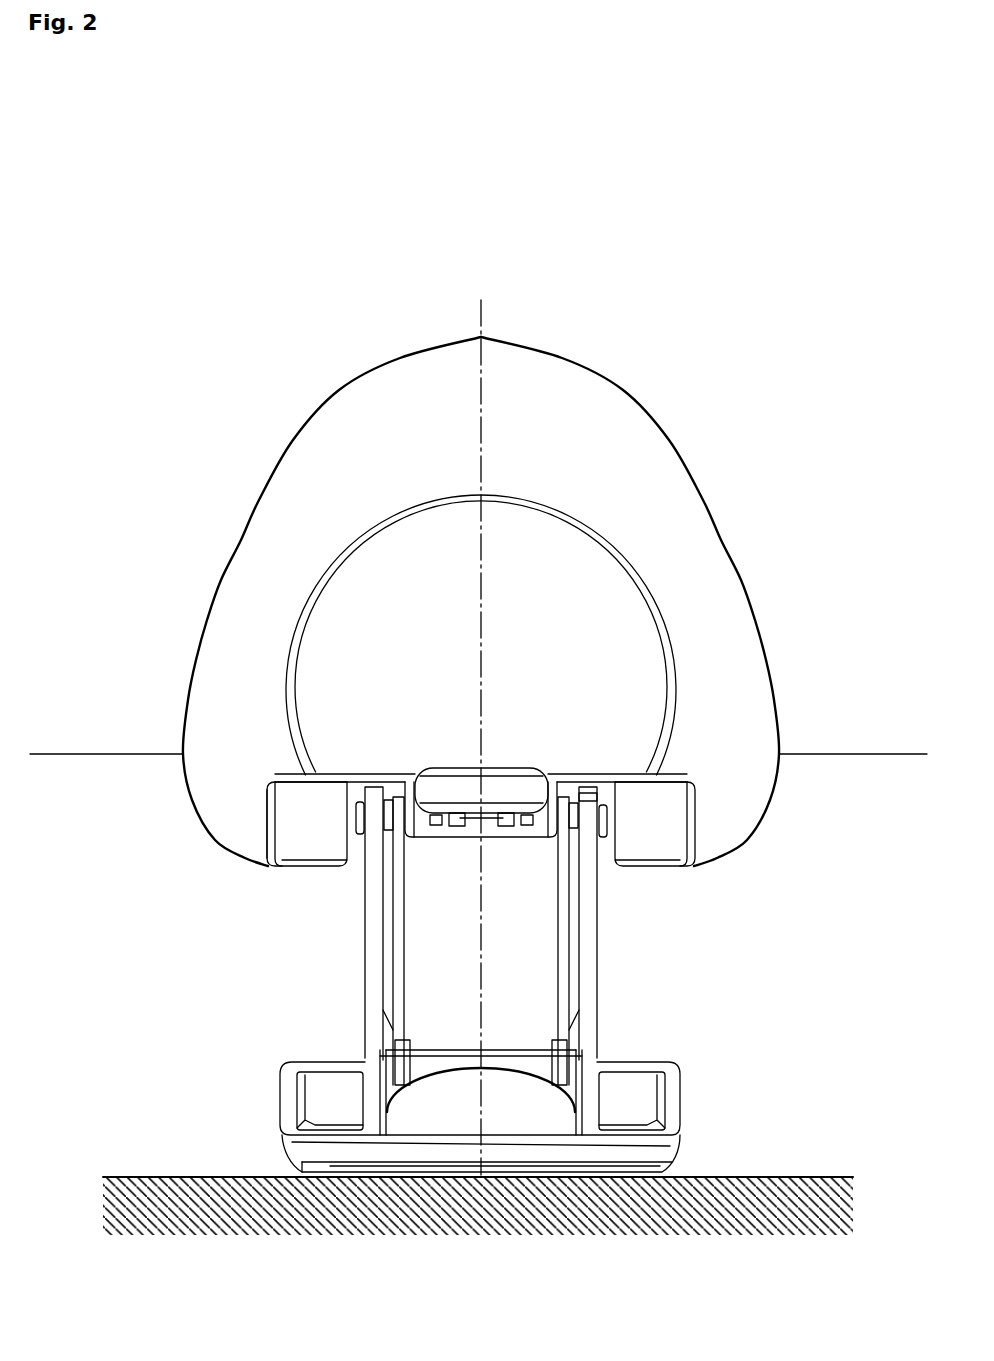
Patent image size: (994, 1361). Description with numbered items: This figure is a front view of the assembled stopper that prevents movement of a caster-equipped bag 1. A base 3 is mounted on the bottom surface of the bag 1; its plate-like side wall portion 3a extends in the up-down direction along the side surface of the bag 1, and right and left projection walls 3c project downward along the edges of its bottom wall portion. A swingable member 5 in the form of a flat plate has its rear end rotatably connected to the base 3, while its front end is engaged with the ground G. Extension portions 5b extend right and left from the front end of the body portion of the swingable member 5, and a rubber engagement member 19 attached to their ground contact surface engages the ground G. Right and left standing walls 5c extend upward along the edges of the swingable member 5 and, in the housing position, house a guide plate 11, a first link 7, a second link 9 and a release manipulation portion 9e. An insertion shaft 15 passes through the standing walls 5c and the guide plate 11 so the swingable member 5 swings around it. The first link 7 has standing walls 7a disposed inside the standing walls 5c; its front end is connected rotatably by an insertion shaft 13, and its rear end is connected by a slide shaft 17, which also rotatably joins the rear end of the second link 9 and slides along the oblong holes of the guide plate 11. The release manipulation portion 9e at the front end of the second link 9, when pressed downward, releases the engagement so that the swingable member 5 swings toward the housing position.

The bag 1 is at (847, 733).
The base 3 is at (614, 406).
The side wall portion 3a is at (647, 506).
The projection walls 3c is at (310, 830).
The swingable member 5 is at (714, 1110).
The extension portions 5b is at (290, 1112).
The standing walls 5c is at (370, 938).
The first link 7 is at (553, 990).
The standing walls 7a is at (407, 980).
The second link 9 is at (508, 937).
The release manipulation portion 9e is at (513, 790).
The guide plate 11 is at (388, 845).
The insertion shaft 13 is at (430, 1060).
The insertion shaft 15 is at (580, 823).
The slide shaft 17 is at (580, 830).
The engagement member 19 is at (328, 1173).
The ground G is at (767, 1198).